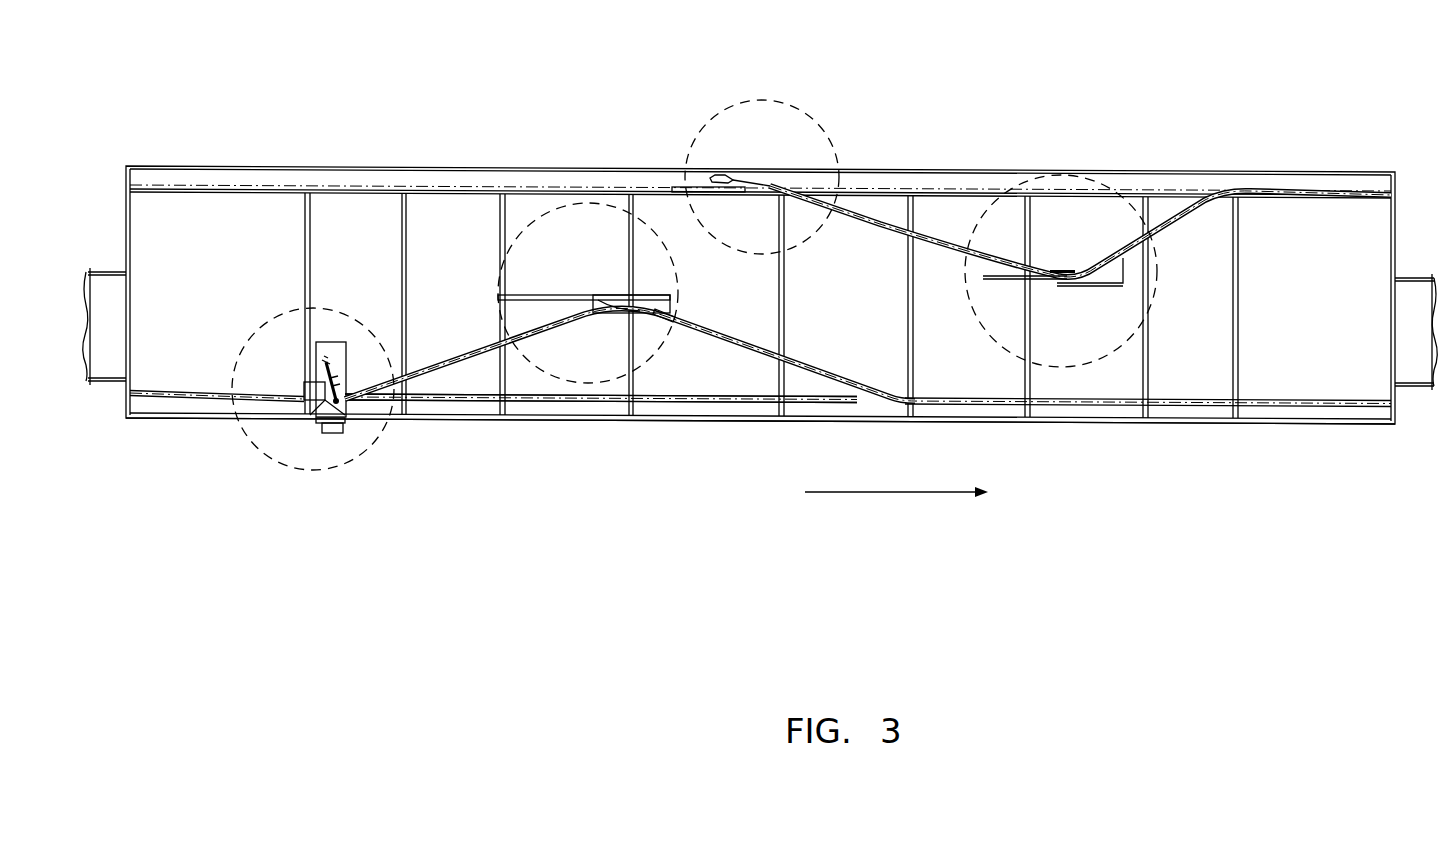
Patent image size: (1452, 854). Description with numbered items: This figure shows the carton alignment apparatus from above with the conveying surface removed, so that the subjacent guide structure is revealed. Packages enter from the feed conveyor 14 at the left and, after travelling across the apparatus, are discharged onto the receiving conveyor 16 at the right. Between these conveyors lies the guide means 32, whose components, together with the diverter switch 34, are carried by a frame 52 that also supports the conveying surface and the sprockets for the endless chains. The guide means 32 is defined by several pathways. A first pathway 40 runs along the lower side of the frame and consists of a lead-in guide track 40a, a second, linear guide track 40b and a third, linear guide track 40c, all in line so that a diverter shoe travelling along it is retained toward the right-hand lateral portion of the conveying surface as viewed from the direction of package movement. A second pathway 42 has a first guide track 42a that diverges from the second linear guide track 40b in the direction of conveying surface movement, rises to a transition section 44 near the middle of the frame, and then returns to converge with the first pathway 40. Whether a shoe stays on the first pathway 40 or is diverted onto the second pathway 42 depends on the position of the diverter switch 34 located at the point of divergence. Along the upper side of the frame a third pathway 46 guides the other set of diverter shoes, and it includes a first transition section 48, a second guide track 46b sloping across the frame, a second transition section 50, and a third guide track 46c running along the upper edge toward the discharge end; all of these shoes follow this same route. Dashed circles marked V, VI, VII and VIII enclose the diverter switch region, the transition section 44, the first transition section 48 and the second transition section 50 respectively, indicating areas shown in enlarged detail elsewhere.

The feed conveyor 14 is at (103, 272).
The receiving conveyor 16 is at (1412, 385).
The guide means 32 is at (482, 182).
The diverter switch 34 is at (333, 433).
The first pathway 40 is at (720, 403).
The lead-in guide track 40a is at (200, 396).
The second, linear guide track 40b is at (530, 403).
The third, linear guide track 40c is at (1068, 405).
The second pathway 42 is at (433, 378).
The first guide track 42a is at (463, 360).
The transition section 44 is at (611, 295).
The third pathway 46 is at (873, 217).
The second guide track 46b is at (897, 235).
The third guide track 46c is at (1288, 192).
The first transition section 48 is at (748, 178).
The second transition section 50 is at (1110, 282).
The frame 52 is at (1268, 427).
The detail view circle V is at (312, 470).
The detail view circle VI is at (633, 377).
The detail view circle VII is at (823, 123).
The detail view circle VIII is at (1105, 167).